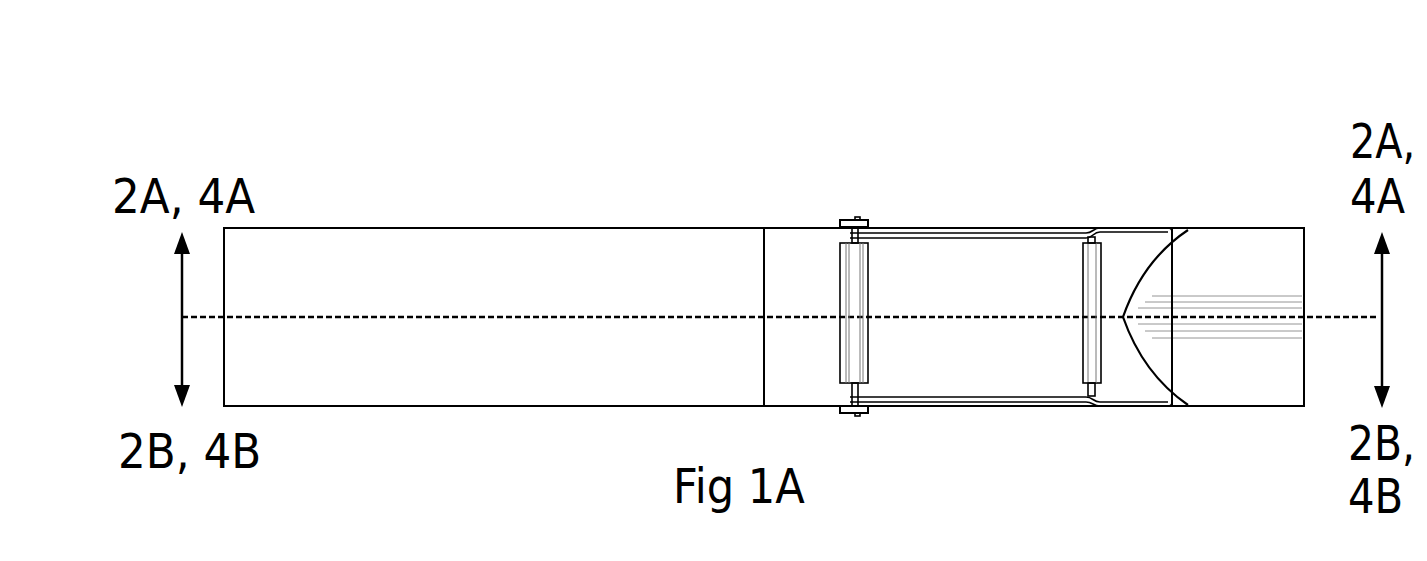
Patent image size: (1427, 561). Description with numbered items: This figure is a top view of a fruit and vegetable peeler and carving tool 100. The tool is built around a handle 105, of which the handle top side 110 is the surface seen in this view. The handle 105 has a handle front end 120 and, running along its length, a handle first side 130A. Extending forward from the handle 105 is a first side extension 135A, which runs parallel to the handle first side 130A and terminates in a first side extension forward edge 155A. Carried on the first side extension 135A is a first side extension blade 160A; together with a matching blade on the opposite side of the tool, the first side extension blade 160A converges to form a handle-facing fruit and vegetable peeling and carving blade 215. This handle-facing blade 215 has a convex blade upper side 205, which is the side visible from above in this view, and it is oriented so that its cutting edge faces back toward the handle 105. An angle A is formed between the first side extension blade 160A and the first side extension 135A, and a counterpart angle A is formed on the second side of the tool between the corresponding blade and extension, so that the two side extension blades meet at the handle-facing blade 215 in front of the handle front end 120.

The fruit and vegetable peeler and carving tool 100 is at (823, 209).
The handle 105 is at (378, 260).
The handle top side 110 is at (494, 317).
The handle front end 120 is at (788, 243).
The handle first side 130A is at (668, 212).
The first side extension 135A is at (984, 205).
The first side extension forward edge 155A is at (1312, 203).
The first side extension blade 160A is at (1272, 235).
The convex blade upper side 205 is at (1183, 395).
The handle-facing fruit and vegetable peeling and carving blade 215 is at (1123, 283).
The angle A is at (1203, 262).